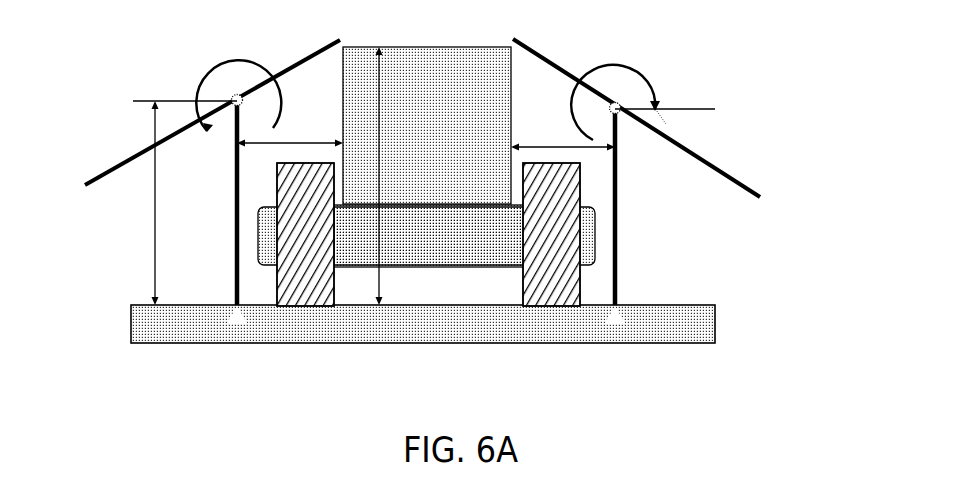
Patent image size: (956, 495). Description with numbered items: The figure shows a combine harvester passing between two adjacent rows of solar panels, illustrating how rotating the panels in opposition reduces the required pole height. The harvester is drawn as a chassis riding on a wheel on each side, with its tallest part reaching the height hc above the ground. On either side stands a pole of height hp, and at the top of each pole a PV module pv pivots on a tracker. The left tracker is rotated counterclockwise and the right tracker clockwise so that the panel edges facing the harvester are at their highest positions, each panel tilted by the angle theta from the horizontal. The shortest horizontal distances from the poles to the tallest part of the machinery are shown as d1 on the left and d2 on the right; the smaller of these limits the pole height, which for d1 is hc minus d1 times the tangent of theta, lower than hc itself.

The pole height hp is at (170, 203).
The tallest height of the farm machinery hc is at (393, 176).
The shortest distance between pole and farm machinery on one side d1 is at (290, 134).
The shortest distance between pole and farm machinery on the other side d2 is at (563, 138).
The angle of rotation of the PV tracker with respect to the horizontal theta is at (422, 100).
The PV module pv is at (422, 127).
The element wheel is at (428, 234).
The element chassis is at (426, 236).